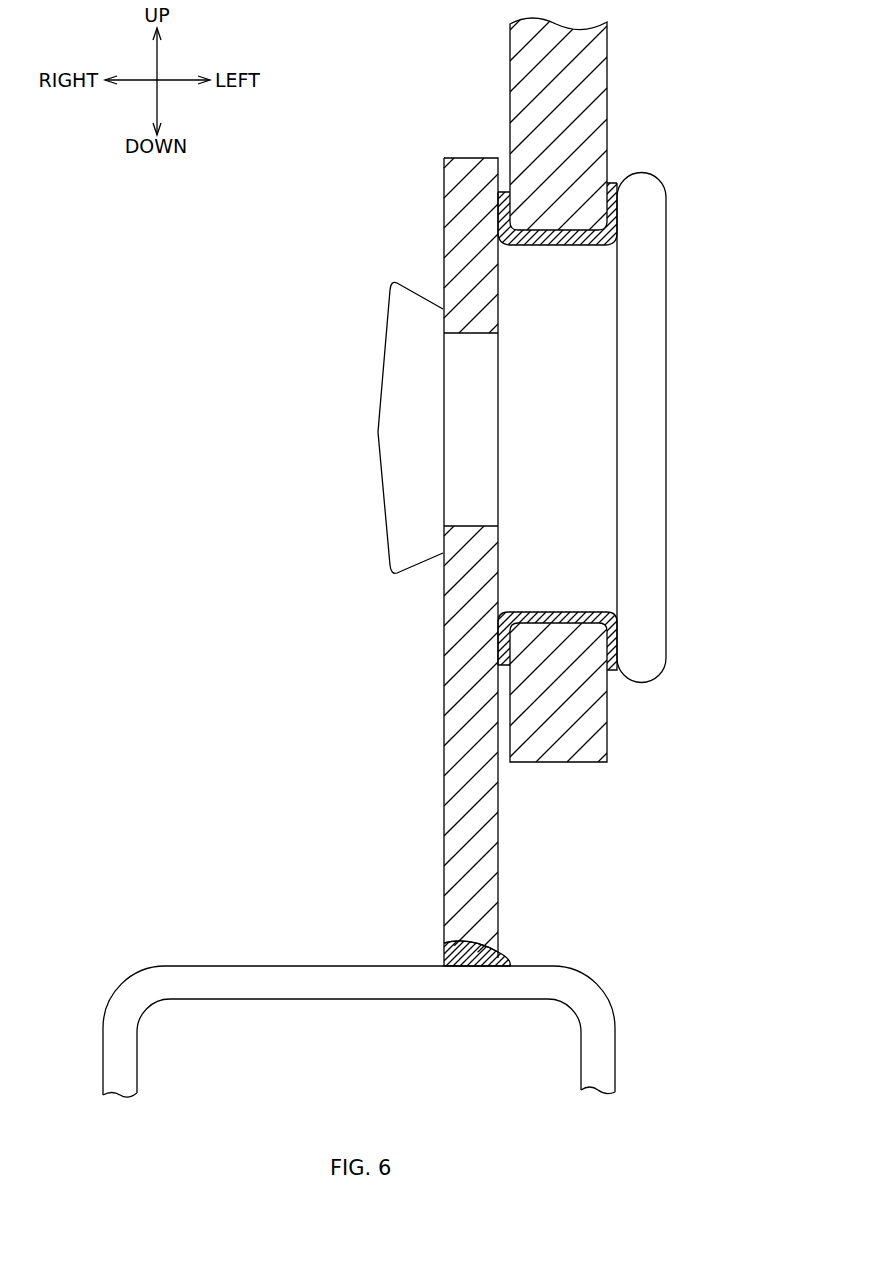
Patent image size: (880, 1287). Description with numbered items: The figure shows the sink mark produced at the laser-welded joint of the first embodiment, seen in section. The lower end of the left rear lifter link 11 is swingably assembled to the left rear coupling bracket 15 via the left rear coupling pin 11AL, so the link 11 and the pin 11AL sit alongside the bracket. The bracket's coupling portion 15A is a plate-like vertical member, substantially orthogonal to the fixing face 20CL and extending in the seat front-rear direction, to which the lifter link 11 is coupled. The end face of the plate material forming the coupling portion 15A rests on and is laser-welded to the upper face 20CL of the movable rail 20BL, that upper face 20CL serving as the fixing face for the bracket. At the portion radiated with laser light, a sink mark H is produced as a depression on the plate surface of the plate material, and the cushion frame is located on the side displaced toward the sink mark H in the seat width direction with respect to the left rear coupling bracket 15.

The left rear lifter link 11 is at (607, 72).
The left rear coupling pin 11AL is at (667, 298).
The left rear coupling bracket 15 is at (483, 542).
The coupling portion 15A is at (498, 852).
The sink mark H is at (447, 962).
The movable rail 20BL is at (128, 980).
The upper face (fixing face) 20CL is at (338, 978).